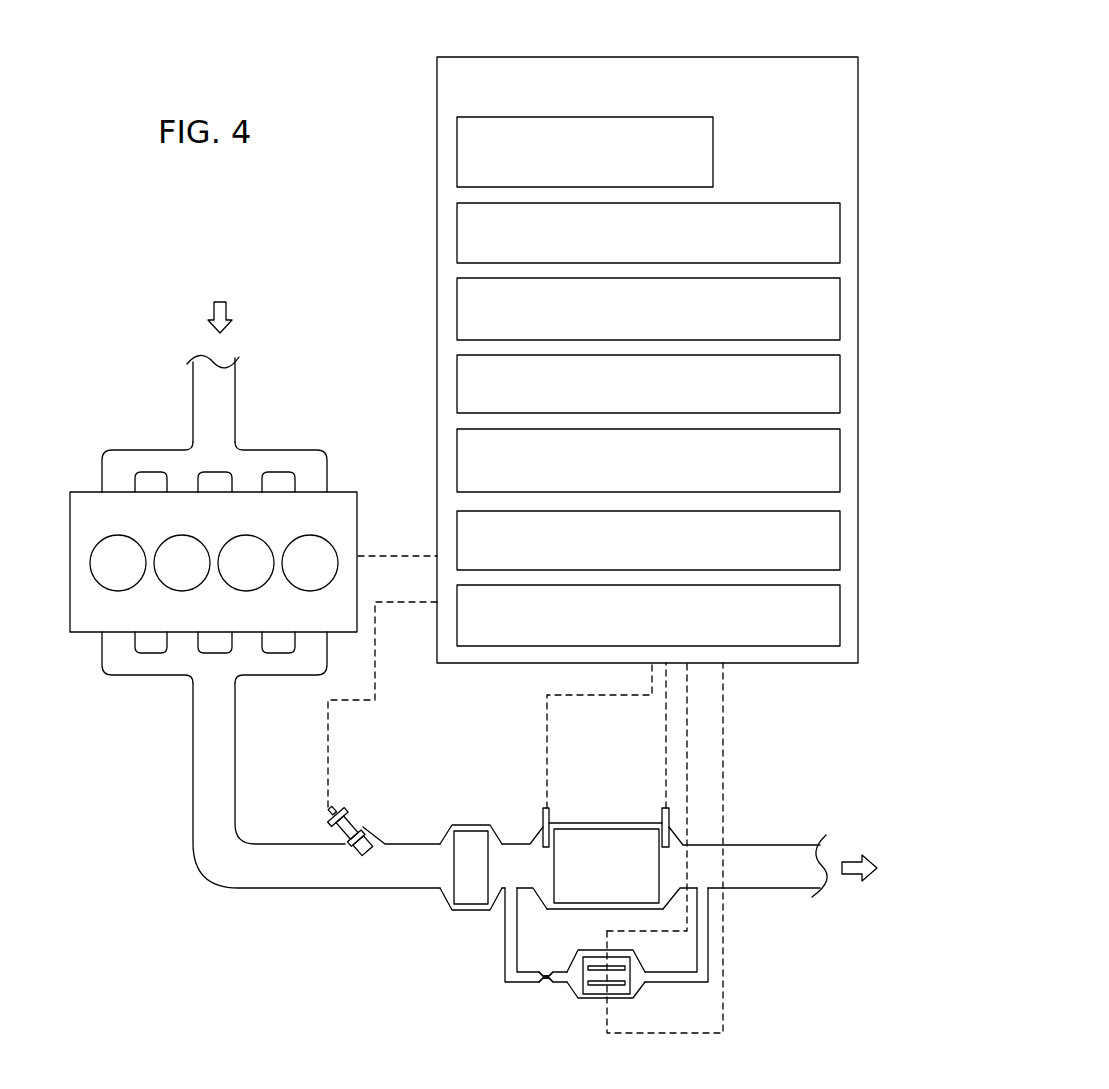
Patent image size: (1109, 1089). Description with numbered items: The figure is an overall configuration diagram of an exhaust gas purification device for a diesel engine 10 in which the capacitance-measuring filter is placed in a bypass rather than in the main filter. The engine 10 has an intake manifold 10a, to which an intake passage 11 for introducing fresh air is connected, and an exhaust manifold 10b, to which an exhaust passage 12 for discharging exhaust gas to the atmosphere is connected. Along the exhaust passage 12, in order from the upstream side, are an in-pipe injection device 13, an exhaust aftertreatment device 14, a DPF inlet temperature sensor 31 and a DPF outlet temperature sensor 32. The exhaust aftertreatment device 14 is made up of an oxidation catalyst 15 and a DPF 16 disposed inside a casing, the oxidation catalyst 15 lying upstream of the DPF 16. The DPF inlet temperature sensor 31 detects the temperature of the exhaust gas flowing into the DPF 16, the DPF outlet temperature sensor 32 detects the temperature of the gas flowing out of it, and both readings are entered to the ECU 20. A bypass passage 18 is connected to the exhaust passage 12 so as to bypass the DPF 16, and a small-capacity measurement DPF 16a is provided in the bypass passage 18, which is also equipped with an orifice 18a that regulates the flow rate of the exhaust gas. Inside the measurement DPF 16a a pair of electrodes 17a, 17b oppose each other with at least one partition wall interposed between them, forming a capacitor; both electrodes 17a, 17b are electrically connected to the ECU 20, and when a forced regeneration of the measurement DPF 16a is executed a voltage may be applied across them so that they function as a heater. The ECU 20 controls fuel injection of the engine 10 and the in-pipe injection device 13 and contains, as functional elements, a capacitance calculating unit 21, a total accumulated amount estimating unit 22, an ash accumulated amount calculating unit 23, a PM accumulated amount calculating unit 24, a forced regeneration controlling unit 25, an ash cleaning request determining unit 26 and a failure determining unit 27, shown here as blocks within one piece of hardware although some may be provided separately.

The engine 10 is at (358, 526).
The intake manifold 10a is at (292, 450).
The exhaust manifold 10b is at (155, 676).
The intake passage 11 is at (236, 370).
The exhaust passage 12 is at (193, 768).
The in-pipe injection device 13 is at (342, 812).
The exhaust aftertreatment device 14 is at (586, 820).
The oxidation catalyst 15 is at (471, 867).
The DPF 16 is at (606, 866).
The measurement DPF 16a is at (627, 981).
The electrode 17a is at (590, 966).
The electrode 17b is at (598, 988).
The bypass passage 18 is at (505, 955).
The orifice 18a is at (548, 984).
The ECU 20 is at (782, 57).
The capacitance calculating unit 21 is at (713, 152).
The total accumulated amount estimating unit 22 is at (840, 232).
The ash accumulated amount calculating unit 23 is at (840, 308).
The PM accumulated amount calculating unit 24 is at (840, 384).
The forced regeneration controlling unit 25 is at (840, 460).
The ash cleaning request determining unit 26 is at (840, 542).
The failure determining unit 27 is at (840, 620).
The DPF inlet temperature sensor 31 is at (545, 808).
The DPF outlet temperature sensor 32 is at (663, 808).